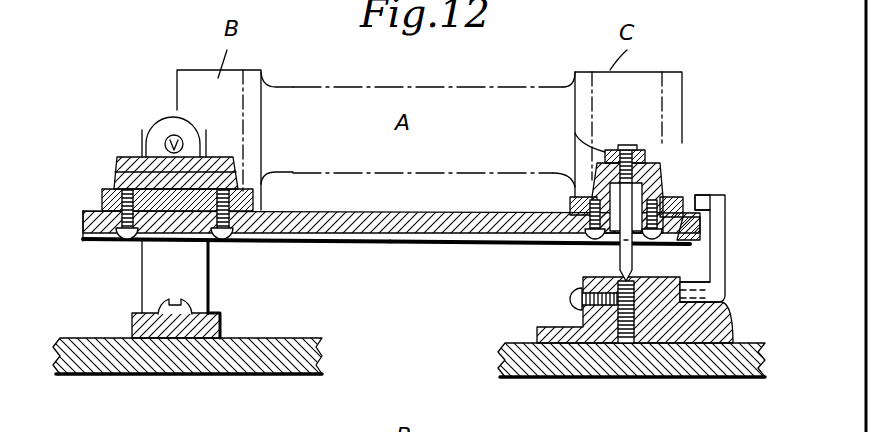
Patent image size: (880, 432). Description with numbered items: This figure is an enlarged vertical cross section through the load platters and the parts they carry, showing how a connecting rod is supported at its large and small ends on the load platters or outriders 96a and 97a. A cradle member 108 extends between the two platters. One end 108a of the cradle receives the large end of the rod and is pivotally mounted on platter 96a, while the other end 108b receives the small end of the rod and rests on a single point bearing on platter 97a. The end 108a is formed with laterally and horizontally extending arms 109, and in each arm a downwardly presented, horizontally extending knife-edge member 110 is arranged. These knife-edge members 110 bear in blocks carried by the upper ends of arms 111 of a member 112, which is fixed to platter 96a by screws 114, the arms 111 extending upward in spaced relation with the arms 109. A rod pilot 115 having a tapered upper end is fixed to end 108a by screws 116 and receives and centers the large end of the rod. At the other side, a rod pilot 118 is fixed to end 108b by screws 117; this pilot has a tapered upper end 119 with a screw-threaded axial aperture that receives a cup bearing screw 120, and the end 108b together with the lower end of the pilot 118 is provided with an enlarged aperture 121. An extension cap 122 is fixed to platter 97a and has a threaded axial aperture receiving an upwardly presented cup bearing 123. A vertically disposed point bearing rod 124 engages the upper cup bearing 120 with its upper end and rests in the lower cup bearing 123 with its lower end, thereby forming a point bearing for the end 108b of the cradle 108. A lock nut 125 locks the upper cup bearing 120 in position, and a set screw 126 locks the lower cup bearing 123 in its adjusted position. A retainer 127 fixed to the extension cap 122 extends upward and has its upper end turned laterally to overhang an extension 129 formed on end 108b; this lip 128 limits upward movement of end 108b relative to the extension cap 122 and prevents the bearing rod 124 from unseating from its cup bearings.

The load platter 96a is at (90, 364).
The load platter 97a is at (533, 370).
The cradle member 108 is at (408, 203).
The cradle end 108a is at (83, 243).
The cradle end 108b is at (574, 246).
The arms 109 is at (170, 122).
The knife-edge member 110 is at (170, 143).
The arms 111 is at (201, 272).
The member 112 is at (222, 320).
The screws 114 is at (157, 307).
The rod pilot 115 is at (120, 167).
The screws 116 is at (101, 200).
The screws 117 is at (570, 207).
The rod pilot 118 is at (593, 200).
The tapered upper end 119 is at (660, 173).
The cup bearing screw 120 is at (640, 147).
The enlarged aperture 121 is at (686, 215).
The extension cap 122 is at (693, 340).
The cup bearing 123 is at (623, 340).
The point bearing rod 124 is at (633, 258).
The lock nut 125 is at (575, 135).
The set screw 126 is at (570, 299).
The retainer 127 is at (727, 283).
The lip 128 is at (703, 200).
The extension 129 is at (726, 217).